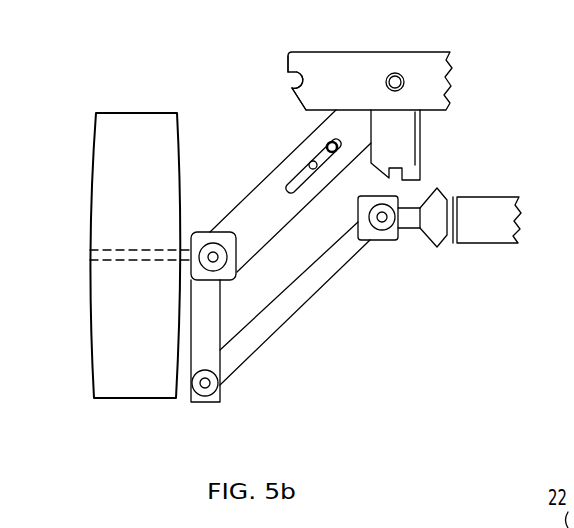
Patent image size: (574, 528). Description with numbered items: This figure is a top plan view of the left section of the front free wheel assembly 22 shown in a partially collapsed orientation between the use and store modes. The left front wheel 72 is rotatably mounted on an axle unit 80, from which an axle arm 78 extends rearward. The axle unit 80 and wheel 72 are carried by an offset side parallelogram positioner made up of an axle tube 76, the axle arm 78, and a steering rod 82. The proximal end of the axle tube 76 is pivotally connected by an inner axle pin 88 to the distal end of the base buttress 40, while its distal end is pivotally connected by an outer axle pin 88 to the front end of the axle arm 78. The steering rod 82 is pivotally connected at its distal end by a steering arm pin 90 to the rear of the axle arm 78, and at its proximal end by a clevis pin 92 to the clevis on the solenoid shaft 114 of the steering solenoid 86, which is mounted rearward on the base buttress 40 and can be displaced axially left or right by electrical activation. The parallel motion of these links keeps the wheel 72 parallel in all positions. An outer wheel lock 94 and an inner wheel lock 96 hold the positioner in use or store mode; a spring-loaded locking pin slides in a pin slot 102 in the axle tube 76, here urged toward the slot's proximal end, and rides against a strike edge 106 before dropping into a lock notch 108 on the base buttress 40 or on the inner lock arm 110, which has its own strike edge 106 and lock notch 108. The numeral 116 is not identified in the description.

The front free wheel assembly 22 is at (107, 261).
The base buttress 40 is at (365, 65).
The left front wheel 72 is at (122, 367).
The axle tube 76 is at (273, 168).
The axle arm 78 is at (218, 399).
The axle unit 80 is at (193, 233).
The steering rod 82 is at (318, 293).
The steering solenoid 86 is at (480, 227).
The axle pin 88 is at (403, 73).
The steering arm pin 90 is at (184, 398).
The clevis pin 92 is at (382, 219).
The outer wheel lock 94 is at (290, 63).
The inner wheel lock 96 is at (368, 147).
The pin slot 102 is at (315, 162).
The strike edge 106 is at (292, 97).
The lock notch 108 is at (300, 73).
The inner lock arm 110 is at (393, 138).
The solenoid shaft 114 is at (430, 227).
The tire 116 is at (123, 152).